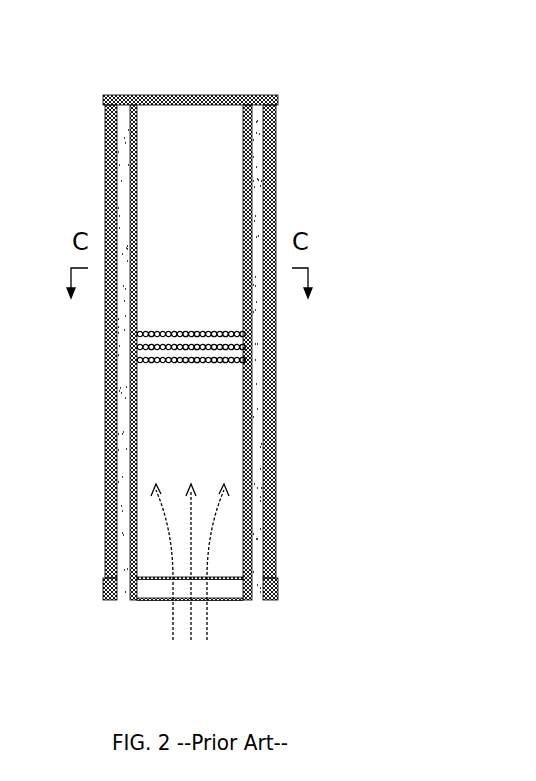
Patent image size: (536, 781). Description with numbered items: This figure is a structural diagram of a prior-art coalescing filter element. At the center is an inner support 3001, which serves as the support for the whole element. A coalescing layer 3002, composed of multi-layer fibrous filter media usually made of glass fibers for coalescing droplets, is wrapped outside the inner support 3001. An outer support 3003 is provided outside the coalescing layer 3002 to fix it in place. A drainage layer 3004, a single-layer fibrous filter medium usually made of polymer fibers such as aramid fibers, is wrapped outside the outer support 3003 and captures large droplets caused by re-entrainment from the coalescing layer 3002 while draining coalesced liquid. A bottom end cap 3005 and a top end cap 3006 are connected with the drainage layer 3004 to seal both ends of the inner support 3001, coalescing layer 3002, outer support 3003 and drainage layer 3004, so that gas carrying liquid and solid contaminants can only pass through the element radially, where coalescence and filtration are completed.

The inner support 3001 is at (250, 442).
The coalescing layer 3002 is at (255, 407).
The outer support 3003 is at (272, 397).
The drainage layer 3004 is at (275, 365).
The bottom end cap 3005 is at (258, 600).
The top end cap 3006 is at (205, 95).